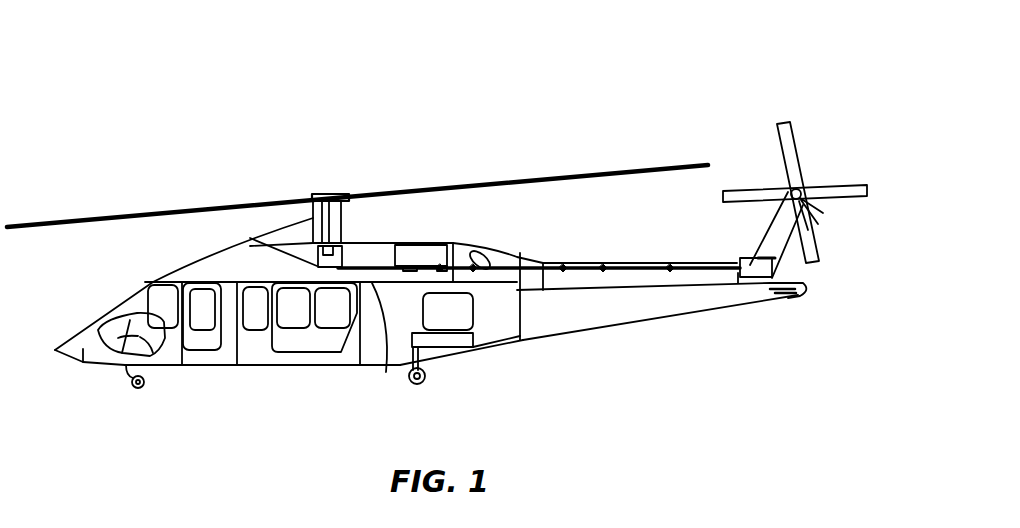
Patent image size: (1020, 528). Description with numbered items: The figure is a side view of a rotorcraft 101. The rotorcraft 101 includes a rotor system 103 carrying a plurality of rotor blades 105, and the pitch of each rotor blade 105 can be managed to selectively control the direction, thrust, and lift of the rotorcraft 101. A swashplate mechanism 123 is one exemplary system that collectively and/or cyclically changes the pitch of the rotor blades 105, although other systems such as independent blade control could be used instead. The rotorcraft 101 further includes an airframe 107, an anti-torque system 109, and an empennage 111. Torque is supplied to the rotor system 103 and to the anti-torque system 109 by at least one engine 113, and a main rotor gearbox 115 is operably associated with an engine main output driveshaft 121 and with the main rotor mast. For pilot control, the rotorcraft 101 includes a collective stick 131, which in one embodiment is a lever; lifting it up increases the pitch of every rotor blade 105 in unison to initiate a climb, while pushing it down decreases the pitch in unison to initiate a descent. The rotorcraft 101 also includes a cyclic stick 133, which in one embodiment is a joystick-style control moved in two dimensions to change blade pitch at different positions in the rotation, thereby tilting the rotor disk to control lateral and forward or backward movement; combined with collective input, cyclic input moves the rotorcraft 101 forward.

The rotorcraft 101 is at (231, 98).
The rotor system 103 is at (355, 181).
The rotor blades 105 is at (574, 174).
The airframe 107 is at (250, 367).
The anti-torque system 109 is at (818, 173).
The empennage 111 is at (648, 326).
The engine 113 is at (417, 243).
The main rotor gearbox 115 is at (250, 238).
The engine main output driveshaft 121 is at (387, 373).
The swashplate mechanism 123 is at (352, 234).
The collective stick 131 is at (124, 372).
The cyclic stick 133 is at (110, 328).